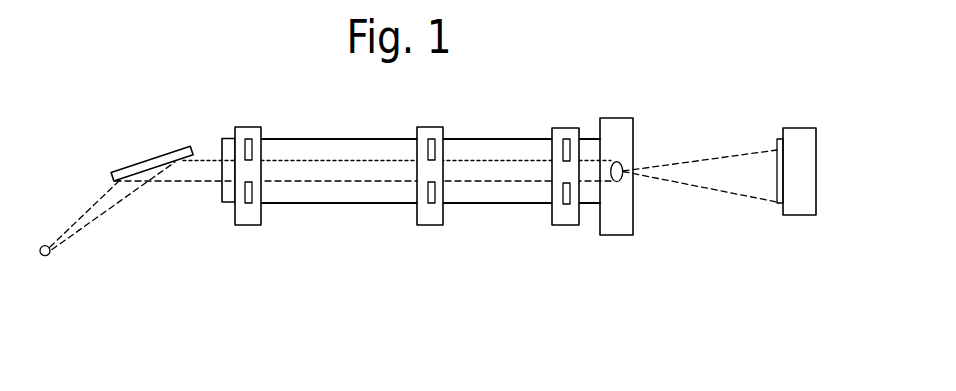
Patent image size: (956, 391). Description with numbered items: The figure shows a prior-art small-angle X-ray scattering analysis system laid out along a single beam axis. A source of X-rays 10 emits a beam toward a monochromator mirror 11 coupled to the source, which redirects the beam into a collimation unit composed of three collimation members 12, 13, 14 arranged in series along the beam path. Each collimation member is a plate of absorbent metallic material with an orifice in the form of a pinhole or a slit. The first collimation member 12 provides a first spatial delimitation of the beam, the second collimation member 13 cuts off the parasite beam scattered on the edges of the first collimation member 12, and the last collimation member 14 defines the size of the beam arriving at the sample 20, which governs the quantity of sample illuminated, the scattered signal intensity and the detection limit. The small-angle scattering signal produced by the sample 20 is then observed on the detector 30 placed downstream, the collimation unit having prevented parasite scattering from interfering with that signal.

The source of X-rays 10 is at (41, 277).
The monochromator mirror 11 is at (139, 140).
The first collimation member 12 is at (249, 233).
The second collimation member 13 is at (431, 234).
The last collimation member 14 is at (566, 234).
The sample 20 is at (624, 193).
The detector 30 is at (800, 225).